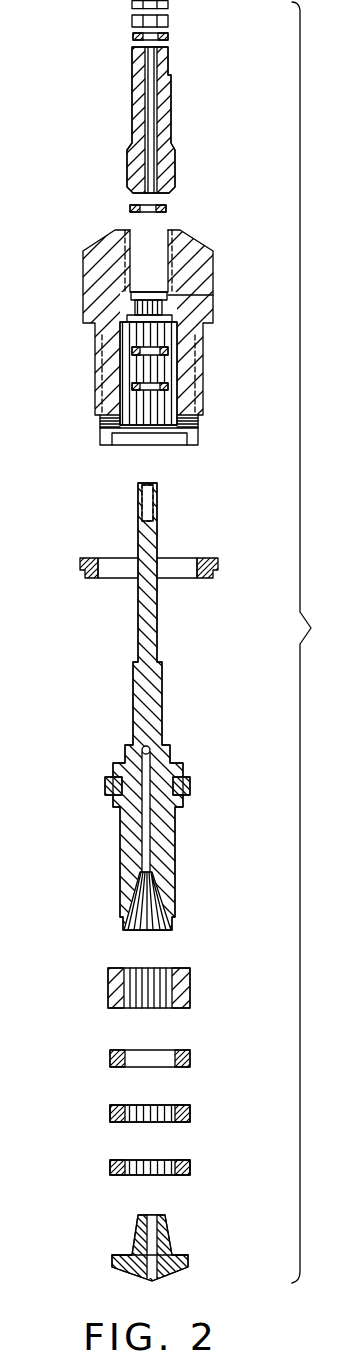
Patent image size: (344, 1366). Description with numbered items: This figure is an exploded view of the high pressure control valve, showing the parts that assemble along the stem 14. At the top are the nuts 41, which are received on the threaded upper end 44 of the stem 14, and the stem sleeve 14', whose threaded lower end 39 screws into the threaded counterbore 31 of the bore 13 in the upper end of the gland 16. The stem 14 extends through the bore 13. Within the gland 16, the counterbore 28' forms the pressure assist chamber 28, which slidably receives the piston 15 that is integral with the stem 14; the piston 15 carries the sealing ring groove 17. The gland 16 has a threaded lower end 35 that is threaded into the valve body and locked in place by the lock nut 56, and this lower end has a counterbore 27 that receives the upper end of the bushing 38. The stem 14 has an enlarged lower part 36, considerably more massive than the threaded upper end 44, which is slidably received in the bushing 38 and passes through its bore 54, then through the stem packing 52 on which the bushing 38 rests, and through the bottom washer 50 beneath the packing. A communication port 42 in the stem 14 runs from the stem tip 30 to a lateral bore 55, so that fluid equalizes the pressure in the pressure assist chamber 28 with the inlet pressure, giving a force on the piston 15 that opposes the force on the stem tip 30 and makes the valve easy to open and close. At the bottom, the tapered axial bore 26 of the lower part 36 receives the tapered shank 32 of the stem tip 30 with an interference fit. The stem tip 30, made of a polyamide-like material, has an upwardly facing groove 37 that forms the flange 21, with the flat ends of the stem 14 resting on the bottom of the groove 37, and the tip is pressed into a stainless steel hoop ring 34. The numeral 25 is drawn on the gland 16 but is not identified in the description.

The nuts 41 is at (130, 22).
The stem sleeve 14' is at (179, 120).
The threaded lower end of stem sleeve 39 is at (170, 165).
The bore 13 is at (138, 278).
The threaded counterbore 31 is at (165, 252).
The gland 16 is at (174, 314).
The shoulder 25 is at (212, 289).
The counterbore 28' is at (156, 373).
The threaded lower end of gland 35 is at (196, 398).
The pressure assist chamber 28 is at (173, 425).
The counterbore 27 is at (122, 440).
The lock nut 56 is at (85, 558).
The threaded upper end of stem 44 is at (157, 535).
The stem 14 is at (158, 706).
The lateral bore 55 is at (152, 742).
The sealing ring groove 17 is at (183, 770).
The piston 15 is at (170, 776).
The communication port 42 is at (138, 833).
The enlarged lower part of stem 36 is at (170, 803).
The tapered axial bore 26 is at (160, 912).
The bore 54 is at (160, 983).
The bushing 38 is at (174, 975).
The stem packing 52 is at (190, 1056).
The bottom washer 50 is at (190, 1113).
The stainless steel hoop ring 34 is at (190, 1167).
The groove 37 is at (141, 1236).
The tapered shank 32 is at (161, 1237).
The flange 21 is at (122, 1258).
The stem tip 30 is at (134, 1237).